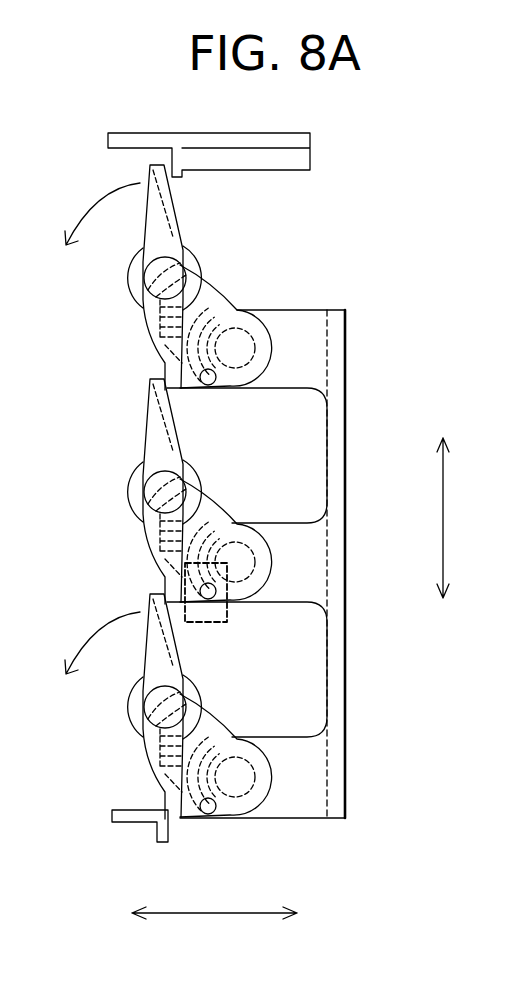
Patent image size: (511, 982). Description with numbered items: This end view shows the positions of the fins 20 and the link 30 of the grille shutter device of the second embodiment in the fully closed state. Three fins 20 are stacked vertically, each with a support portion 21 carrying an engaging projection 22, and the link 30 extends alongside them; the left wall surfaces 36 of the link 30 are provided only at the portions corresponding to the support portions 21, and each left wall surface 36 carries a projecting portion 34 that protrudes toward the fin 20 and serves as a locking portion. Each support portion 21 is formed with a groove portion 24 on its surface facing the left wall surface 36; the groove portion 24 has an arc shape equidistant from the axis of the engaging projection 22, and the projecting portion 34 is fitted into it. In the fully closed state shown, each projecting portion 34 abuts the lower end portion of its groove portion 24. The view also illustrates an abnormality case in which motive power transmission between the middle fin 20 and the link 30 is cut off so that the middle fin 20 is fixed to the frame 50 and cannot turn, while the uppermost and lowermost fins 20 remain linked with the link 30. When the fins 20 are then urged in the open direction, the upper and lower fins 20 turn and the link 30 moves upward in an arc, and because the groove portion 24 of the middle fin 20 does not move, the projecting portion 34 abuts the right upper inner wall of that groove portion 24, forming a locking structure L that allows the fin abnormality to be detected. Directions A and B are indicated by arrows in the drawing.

The fin 20 is at (148, 165).
The support portion 21 is at (252, 328).
The engaging projection 22 is at (245, 386).
The groove portion 24 is at (217, 307).
The link 30 is at (343, 310).
The projecting portion 34 is at (203, 386).
The left wall surface 36 is at (307, 323).
The frame 50 is at (279, 133).
The locking structure L is at (183, 588).
The direction A is at (454, 518).
The direction B is at (214, 930).